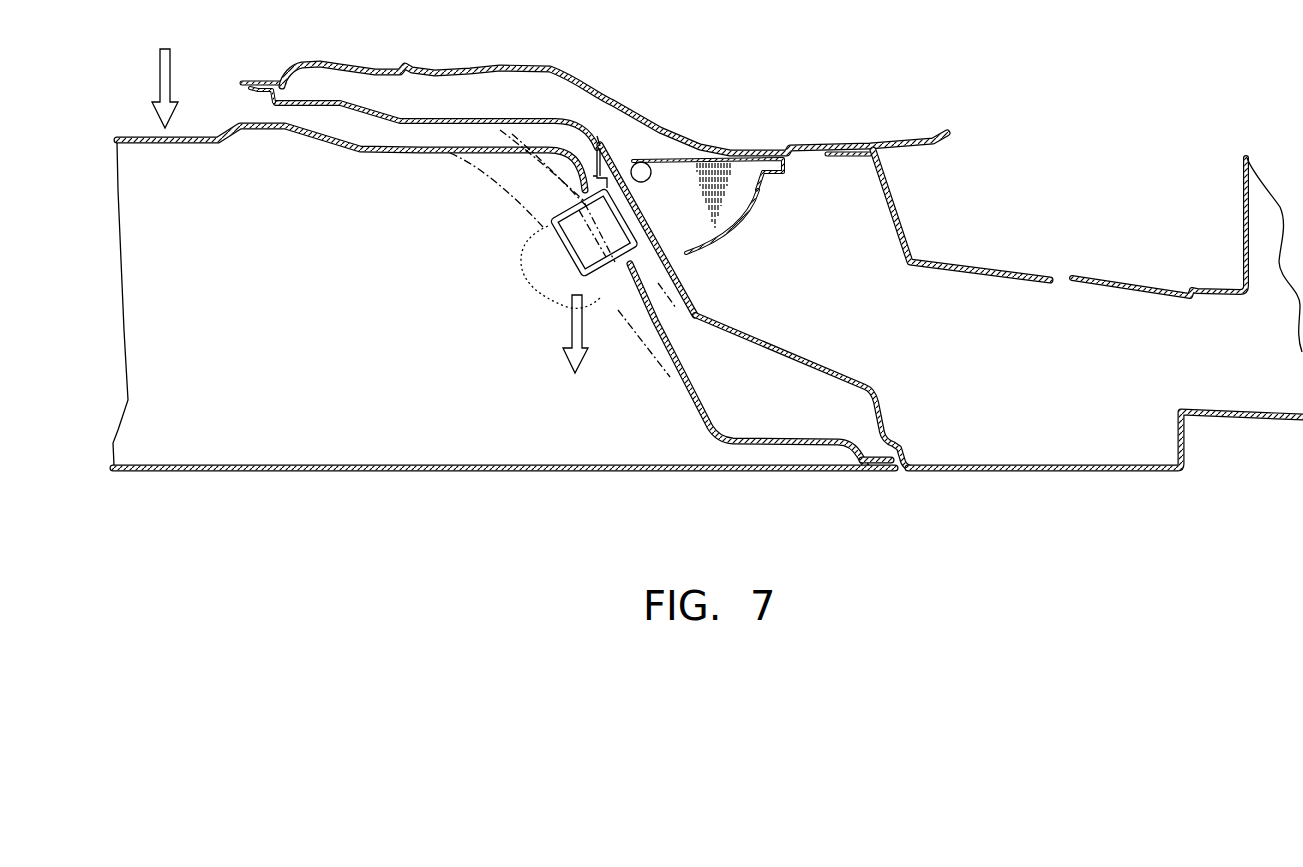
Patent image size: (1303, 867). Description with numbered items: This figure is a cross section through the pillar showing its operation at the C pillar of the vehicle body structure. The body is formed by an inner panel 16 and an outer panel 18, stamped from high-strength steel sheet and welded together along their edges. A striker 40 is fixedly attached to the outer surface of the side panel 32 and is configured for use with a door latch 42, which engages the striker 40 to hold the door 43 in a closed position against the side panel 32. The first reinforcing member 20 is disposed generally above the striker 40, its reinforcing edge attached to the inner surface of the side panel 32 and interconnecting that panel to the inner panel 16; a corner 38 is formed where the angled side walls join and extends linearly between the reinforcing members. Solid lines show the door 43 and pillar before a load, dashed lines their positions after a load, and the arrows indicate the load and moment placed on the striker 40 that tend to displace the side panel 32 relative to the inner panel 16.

The inner panel 16 is at (753, 152).
The outer panel 18 is at (1018, 478).
The first reinforcing member 20 is at (701, 213).
The side panel 32 is at (687, 287).
The corner 38 is at (642, 162).
The striker 40 is at (597, 168).
The door latch 42 is at (600, 292).
The door 43 is at (443, 472).